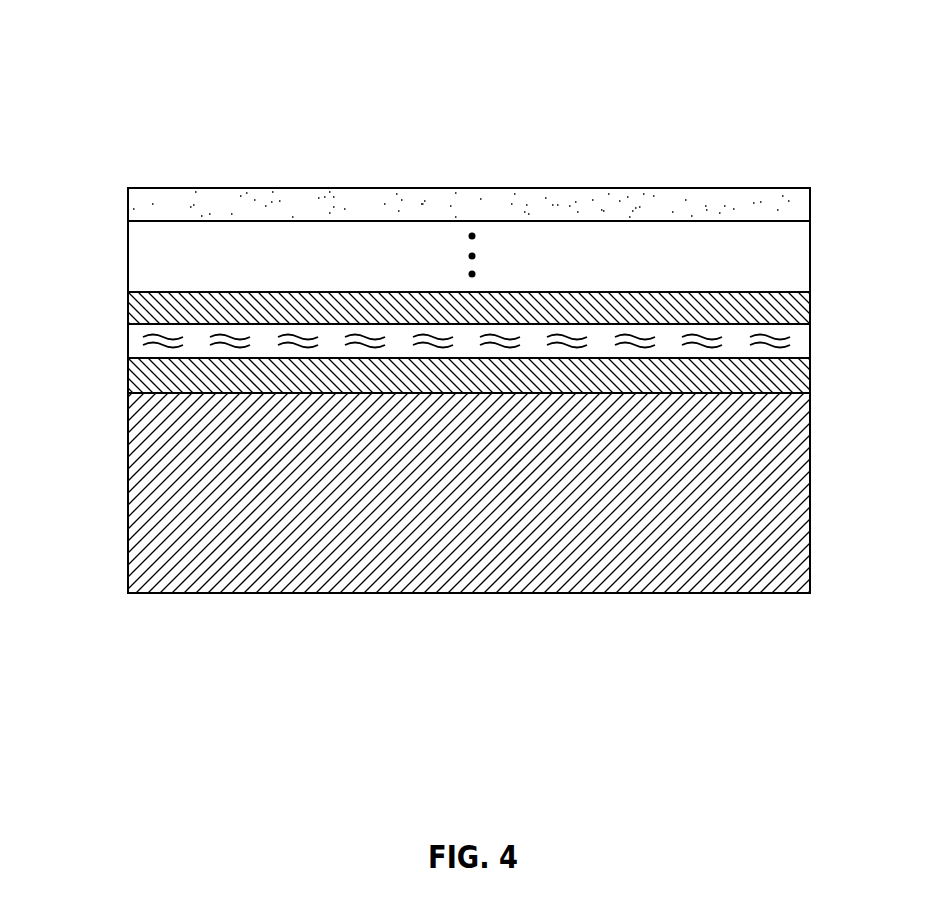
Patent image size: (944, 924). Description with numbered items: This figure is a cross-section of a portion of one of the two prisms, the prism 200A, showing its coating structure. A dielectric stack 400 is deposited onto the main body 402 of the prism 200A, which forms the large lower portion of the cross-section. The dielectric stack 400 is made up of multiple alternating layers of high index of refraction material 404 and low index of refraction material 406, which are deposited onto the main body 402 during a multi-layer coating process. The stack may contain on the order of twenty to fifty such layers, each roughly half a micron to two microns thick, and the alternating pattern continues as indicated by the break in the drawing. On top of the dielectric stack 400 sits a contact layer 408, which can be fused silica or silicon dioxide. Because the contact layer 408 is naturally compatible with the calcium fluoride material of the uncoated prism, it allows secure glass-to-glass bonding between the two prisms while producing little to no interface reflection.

The prism 200A is at (120, 94).
The dielectric stack 400 is at (128, 224).
The main body 402 is at (810, 485).
The high index of refraction layer 404 is at (810, 302).
The low index of refraction layer 406 is at (810, 335).
The contact layer 408 is at (810, 200).